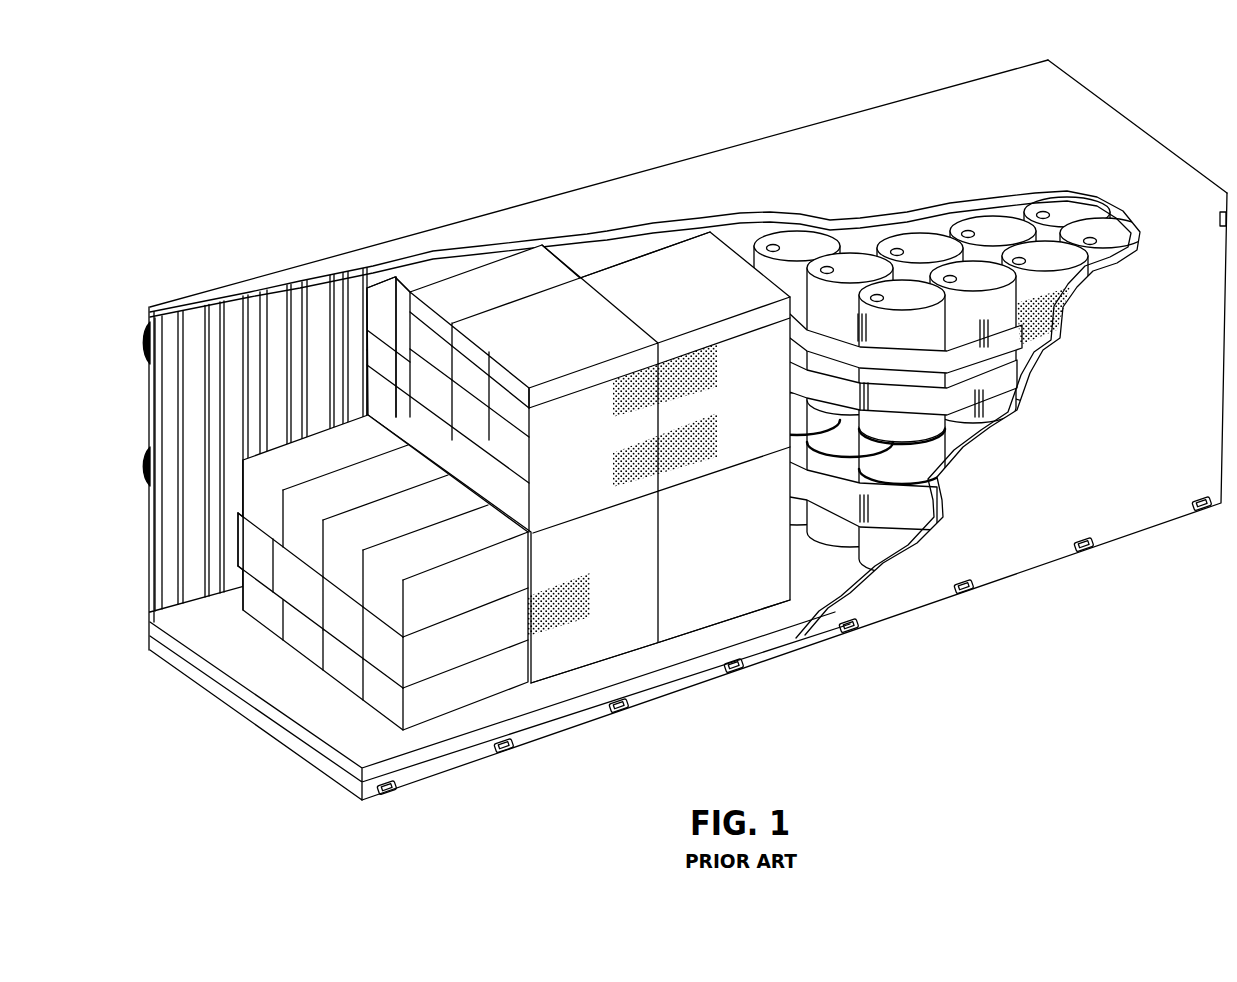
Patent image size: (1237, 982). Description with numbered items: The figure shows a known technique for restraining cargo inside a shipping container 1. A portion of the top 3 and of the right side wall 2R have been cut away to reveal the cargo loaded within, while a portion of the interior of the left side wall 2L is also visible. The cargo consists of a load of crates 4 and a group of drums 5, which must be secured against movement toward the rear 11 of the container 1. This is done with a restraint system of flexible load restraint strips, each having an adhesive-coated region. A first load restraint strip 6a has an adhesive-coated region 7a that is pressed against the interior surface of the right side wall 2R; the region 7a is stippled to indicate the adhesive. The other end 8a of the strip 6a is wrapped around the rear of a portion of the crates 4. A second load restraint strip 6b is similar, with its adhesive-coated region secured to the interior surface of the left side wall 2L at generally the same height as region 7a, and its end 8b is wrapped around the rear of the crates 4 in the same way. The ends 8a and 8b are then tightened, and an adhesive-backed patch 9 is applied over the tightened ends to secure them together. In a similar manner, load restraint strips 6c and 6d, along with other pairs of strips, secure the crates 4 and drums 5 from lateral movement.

The shipping container 1 is at (1120, 110).
The left side wall 2L is at (150, 397).
The right side wall 2R is at (1112, 495).
The top 3 is at (917, 118).
The crates 4 is at (653, 426).
The drums 5 is at (798, 242).
The first load restraint strip 6a is at (583, 397).
The second load restraint strip 6b is at (375, 300).
The load restraint strip 6c is at (565, 483).
The load restraint strip 6d is at (377, 387).
The adhesive-coated region 7a is at (700, 357).
The end of load restraint strip 8a is at (467, 377).
The end of load restraint strip 8b is at (395, 320).
The adhesive-backed patch 9 is at (428, 343).
The rear 11 is at (207, 642).